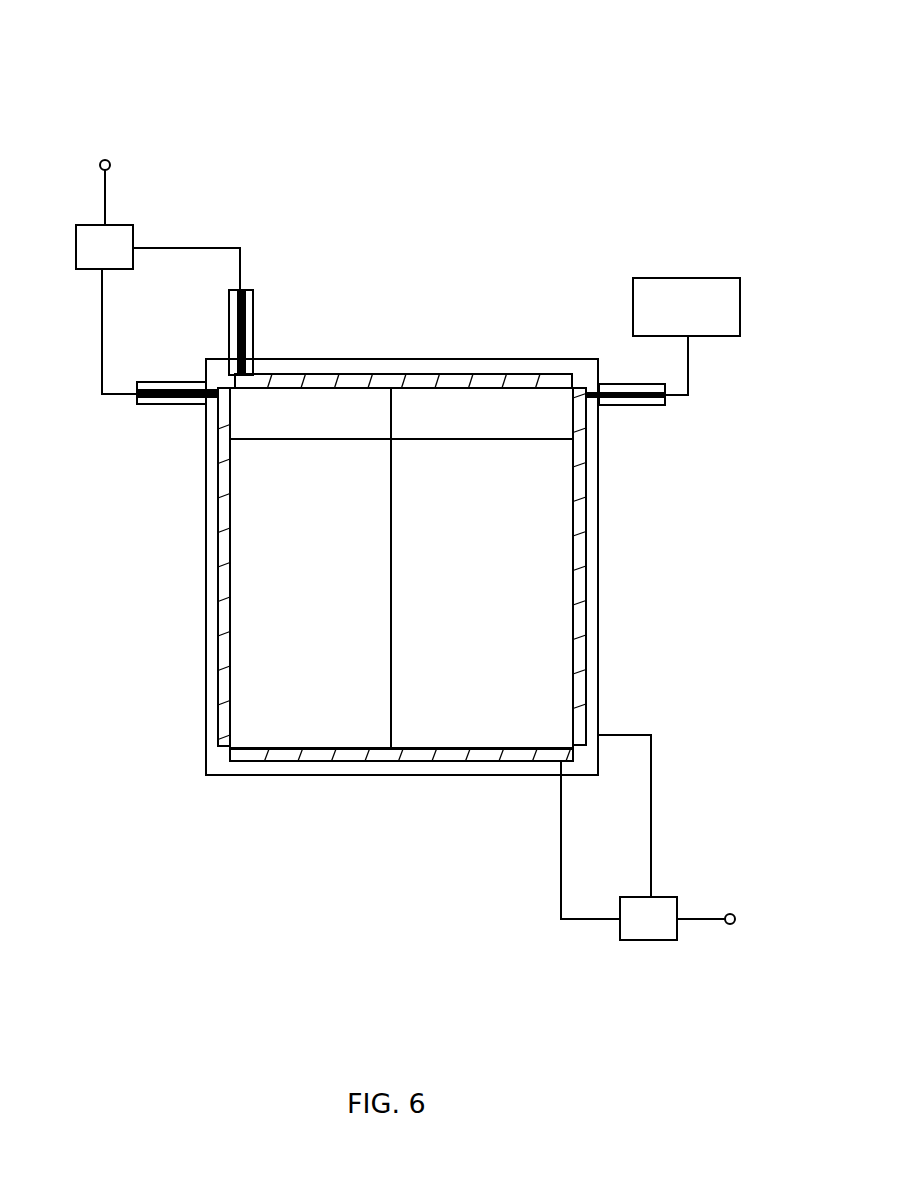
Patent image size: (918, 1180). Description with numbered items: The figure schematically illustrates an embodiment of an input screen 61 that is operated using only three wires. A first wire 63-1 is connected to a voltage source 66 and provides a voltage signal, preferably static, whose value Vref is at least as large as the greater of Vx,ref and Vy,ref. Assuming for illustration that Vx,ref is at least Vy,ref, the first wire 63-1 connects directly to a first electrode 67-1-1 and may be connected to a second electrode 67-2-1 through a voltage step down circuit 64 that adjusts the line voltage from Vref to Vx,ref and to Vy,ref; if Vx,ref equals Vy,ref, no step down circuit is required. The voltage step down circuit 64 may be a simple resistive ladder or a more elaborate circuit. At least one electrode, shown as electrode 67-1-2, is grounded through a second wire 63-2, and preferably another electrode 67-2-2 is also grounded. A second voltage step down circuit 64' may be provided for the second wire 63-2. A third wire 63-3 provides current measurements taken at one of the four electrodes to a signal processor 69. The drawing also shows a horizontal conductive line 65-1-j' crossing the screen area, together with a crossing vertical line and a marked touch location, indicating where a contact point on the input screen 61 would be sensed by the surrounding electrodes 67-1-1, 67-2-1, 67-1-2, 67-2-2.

The input screen 61 is at (494, 400).
The voltage source 66 is at (185, 163).
The first wire 63-1 is at (175, 190).
The voltage step down circuit 64 is at (164, 299).
The signal processor 69 is at (717, 311).
The third wire 63-3 is at (752, 367).
The second electrode 67-2-1 is at (403, 320).
The electrode 67-2-2 is at (401, 790).
The first electrode 67-1-1 is at (146, 567).
The electrode 67-1-2 is at (683, 566).
The horizontal conductive line 65-1-j' is at (401, 466).
The second voltage step down circuit 64' is at (594, 861).
The second wire 63-2 is at (749, 889).